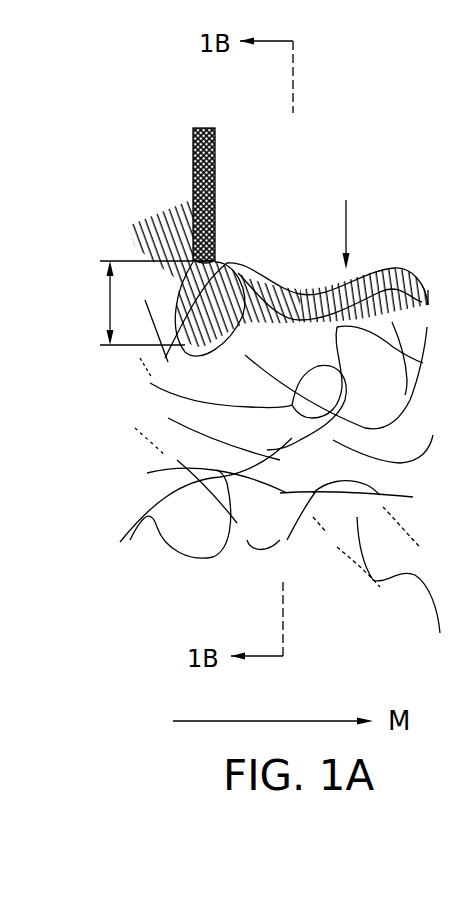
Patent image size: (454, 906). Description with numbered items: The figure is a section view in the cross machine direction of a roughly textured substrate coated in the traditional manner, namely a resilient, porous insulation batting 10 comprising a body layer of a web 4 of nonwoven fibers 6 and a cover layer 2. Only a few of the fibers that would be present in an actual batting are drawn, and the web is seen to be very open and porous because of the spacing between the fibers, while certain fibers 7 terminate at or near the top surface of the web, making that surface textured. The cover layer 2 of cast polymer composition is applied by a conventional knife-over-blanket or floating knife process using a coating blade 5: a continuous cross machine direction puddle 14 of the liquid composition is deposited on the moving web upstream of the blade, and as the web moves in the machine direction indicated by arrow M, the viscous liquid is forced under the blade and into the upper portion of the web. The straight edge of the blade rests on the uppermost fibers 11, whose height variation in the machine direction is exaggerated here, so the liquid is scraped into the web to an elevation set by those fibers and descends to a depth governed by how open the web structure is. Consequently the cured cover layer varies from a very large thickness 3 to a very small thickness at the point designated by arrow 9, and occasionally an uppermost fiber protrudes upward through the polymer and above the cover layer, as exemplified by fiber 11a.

The cover layer 2 is at (422, 270).
The very large thickness 3 is at (107, 315).
The web 4 is at (404, 590).
The coating blade 5 is at (215, 177).
The nonwoven fibers 6 is at (213, 560).
The fibers terminating near top surface 7 is at (133, 312).
The arrow designating very small thickness point 9 is at (345, 221).
The insulation batting 10 is at (280, 233).
The uppermost fibers 11 is at (343, 292).
The protruding fiber 11a is at (238, 263).
The puddle 14 is at (160, 205).